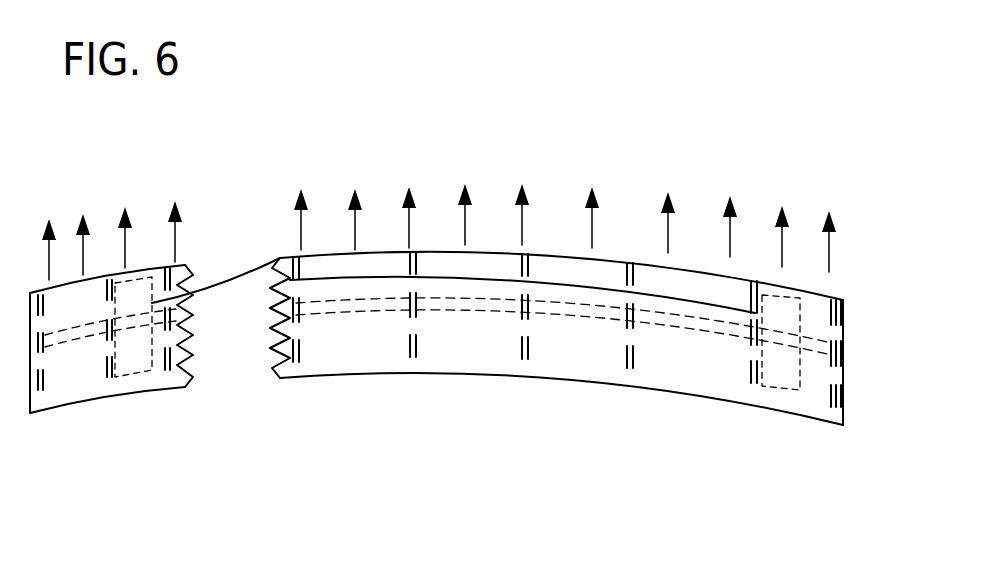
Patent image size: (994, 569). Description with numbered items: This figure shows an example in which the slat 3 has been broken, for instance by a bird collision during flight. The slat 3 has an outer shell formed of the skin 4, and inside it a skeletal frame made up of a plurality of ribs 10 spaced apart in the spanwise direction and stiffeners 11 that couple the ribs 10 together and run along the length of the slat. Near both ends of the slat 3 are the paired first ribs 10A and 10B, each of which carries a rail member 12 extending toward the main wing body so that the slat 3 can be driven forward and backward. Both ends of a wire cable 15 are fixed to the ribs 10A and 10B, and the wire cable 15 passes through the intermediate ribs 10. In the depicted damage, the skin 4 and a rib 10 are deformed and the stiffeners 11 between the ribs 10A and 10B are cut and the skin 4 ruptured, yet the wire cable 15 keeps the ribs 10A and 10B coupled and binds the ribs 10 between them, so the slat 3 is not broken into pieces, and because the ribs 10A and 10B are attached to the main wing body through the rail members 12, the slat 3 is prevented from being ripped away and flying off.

The slat 3 is at (626, 252).
The skin 4 is at (690, 283).
The ribs 10 is at (436, 350).
The first rib 10A is at (556, 350).
The first rib 10B is at (198, 362).
The stiffeners 11 is at (487, 317).
The rail member 12 is at (122, 399).
The wire cable 15 is at (222, 285).